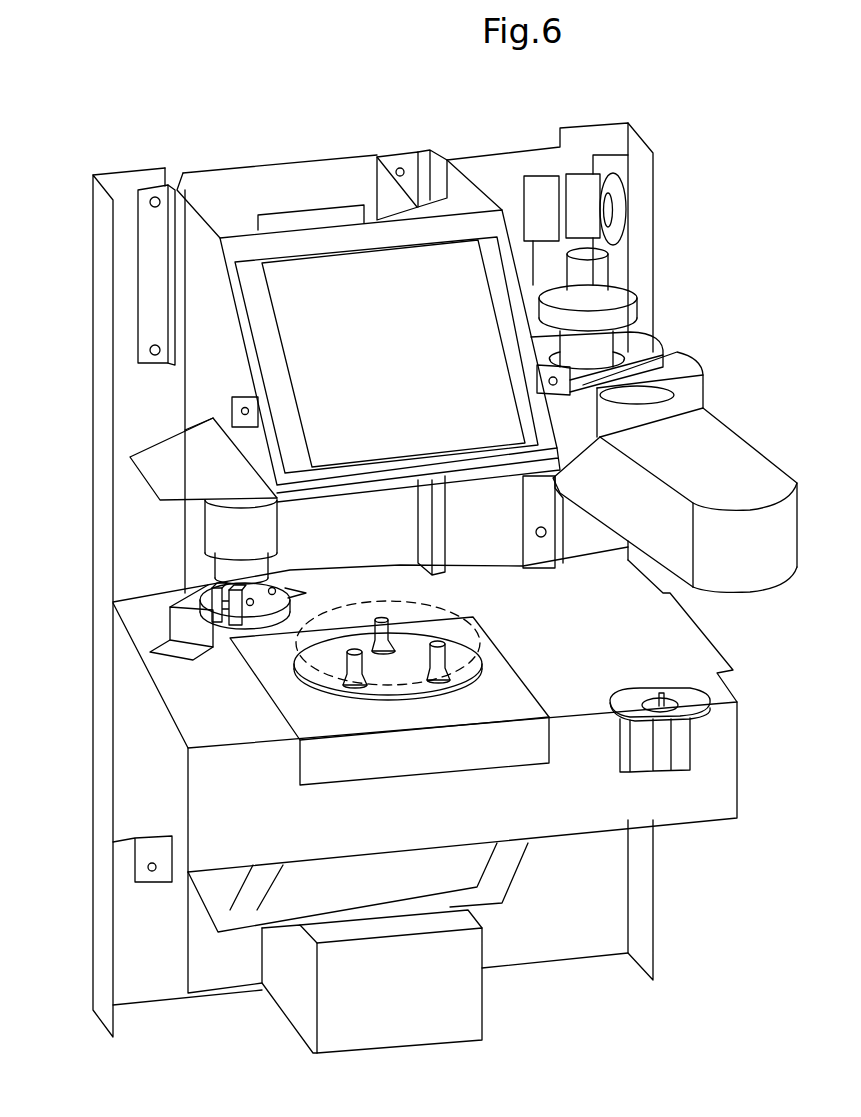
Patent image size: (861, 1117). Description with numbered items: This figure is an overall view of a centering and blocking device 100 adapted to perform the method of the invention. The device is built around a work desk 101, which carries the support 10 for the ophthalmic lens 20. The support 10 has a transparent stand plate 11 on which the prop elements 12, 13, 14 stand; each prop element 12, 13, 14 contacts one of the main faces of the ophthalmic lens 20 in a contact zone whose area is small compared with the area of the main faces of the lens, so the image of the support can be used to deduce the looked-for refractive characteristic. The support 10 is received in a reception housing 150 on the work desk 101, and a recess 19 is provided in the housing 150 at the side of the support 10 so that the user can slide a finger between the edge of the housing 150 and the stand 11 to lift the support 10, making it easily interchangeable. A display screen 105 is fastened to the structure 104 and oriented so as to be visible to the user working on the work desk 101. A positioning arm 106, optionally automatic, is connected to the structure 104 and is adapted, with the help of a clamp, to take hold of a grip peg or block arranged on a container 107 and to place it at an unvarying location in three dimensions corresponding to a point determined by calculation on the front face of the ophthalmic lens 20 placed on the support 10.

The centering and blocking device 100 is at (745, 233).
The work desk 101 is at (687, 653).
The structure 104 is at (130, 405).
The display screen 105 is at (320, 282).
The positioning arm 106 is at (743, 458).
The container 107 is at (697, 700).
The support 10 is at (349, 689).
The stand plate 11 is at (420, 724).
The prop element 12 is at (358, 665).
The prop element 13 is at (381, 617).
The prop element 14 is at (447, 673).
The recess 19 is at (437, 630).
The ophthalmic lens 20 is at (320, 658).
The reception housing 150 is at (333, 693).